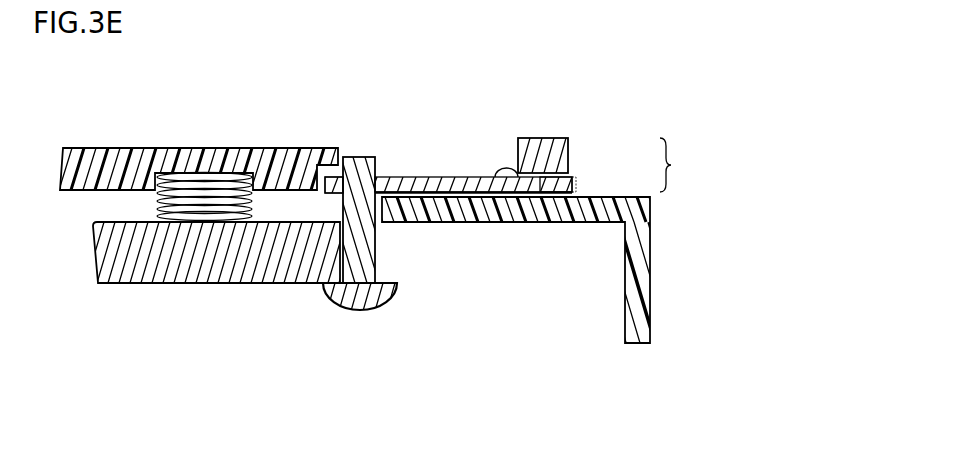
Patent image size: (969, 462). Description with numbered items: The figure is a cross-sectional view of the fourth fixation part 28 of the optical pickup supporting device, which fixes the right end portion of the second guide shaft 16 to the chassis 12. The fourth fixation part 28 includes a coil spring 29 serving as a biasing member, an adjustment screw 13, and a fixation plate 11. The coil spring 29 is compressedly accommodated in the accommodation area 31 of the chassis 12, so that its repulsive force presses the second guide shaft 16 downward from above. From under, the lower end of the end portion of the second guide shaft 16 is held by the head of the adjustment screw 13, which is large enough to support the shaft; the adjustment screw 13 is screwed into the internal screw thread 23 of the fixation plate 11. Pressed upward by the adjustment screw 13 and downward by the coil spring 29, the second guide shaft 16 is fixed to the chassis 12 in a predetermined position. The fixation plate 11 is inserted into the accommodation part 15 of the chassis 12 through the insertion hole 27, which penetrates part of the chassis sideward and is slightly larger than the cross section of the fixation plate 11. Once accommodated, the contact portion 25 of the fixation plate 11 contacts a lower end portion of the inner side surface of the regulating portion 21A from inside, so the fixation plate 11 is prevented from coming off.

The fixation plate 11 is at (457, 186).
The chassis 12 is at (633, 367).
The adjustment screw 13 is at (365, 300).
The accommodation part 15 is at (672, 165).
The second guide shaft 16 is at (143, 283).
The regulating portion 21A is at (557, 147).
The internal screw thread 23 is at (377, 184).
The contact portion 25 is at (502, 168).
The insertion hole 27 is at (577, 185).
The fourth fixation part 28 is at (287, 115).
The coil spring 29 is at (225, 172).
The accommodation area 31 is at (157, 168).